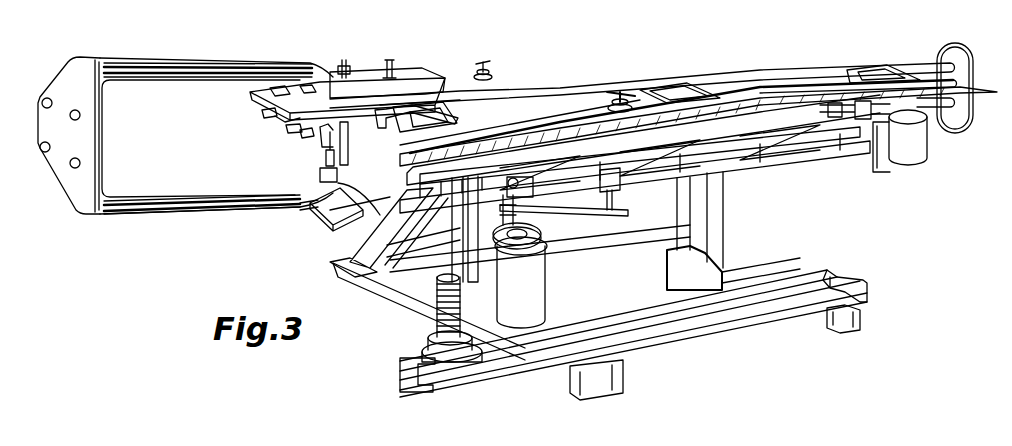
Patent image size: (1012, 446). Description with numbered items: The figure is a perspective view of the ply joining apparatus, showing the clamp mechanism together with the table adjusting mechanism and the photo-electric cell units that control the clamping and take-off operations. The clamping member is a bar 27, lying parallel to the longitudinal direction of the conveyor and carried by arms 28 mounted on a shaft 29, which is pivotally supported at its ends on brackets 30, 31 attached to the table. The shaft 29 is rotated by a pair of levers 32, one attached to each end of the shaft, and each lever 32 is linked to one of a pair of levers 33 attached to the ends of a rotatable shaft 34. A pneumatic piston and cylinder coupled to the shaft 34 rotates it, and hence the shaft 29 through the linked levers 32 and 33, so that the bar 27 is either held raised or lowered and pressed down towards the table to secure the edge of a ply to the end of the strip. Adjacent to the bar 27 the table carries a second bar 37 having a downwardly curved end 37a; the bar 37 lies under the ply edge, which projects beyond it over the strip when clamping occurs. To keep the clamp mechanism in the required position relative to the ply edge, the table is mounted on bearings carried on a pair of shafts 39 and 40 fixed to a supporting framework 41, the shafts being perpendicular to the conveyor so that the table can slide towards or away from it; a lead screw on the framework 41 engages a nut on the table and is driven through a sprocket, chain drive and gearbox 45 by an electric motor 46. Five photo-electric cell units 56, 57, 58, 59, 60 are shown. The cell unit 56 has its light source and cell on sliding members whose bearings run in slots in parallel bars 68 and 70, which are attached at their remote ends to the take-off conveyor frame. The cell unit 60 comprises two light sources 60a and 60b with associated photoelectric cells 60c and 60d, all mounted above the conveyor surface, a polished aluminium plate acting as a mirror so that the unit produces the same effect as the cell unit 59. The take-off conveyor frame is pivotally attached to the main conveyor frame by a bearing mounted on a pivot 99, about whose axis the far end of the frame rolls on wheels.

The bar 27 is at (513, 133).
The arms 28 is at (437, 105).
The shaft 29 is at (730, 90).
The bracket 30 is at (335, 208).
The bracket 31 is at (943, 53).
The levers 32 is at (320, 133).
The levers 33 is at (321, 173).
The rotatable shaft 34 is at (317, 204).
The second bar 37 is at (777, 110).
The downwardly curved end 37a is at (383, 213).
The shaft 39 is at (807, 142).
The shaft 40 is at (530, 222).
The supporting framework 41 is at (733, 180).
The gearbox 45 is at (580, 210).
The electric motor 46 is at (533, 303).
The photo-electric cell unit 56 is at (397, 74).
The photo-electric cell unit 57 is at (622, 98).
The photo-electric cell unit 58 is at (486, 75).
The photo-electric cell unit 59 is at (345, 68).
The photo-electric cell unit 60 is at (262, 100).
The light source 60a is at (280, 118).
The light source 60b is at (267, 115).
The photoelectric cell 60c is at (302, 134).
The photoelectric cell 60d is at (290, 130).
The bar 68 is at (222, 76).
The bar 70 is at (188, 207).
The pivot 99 is at (427, 335).